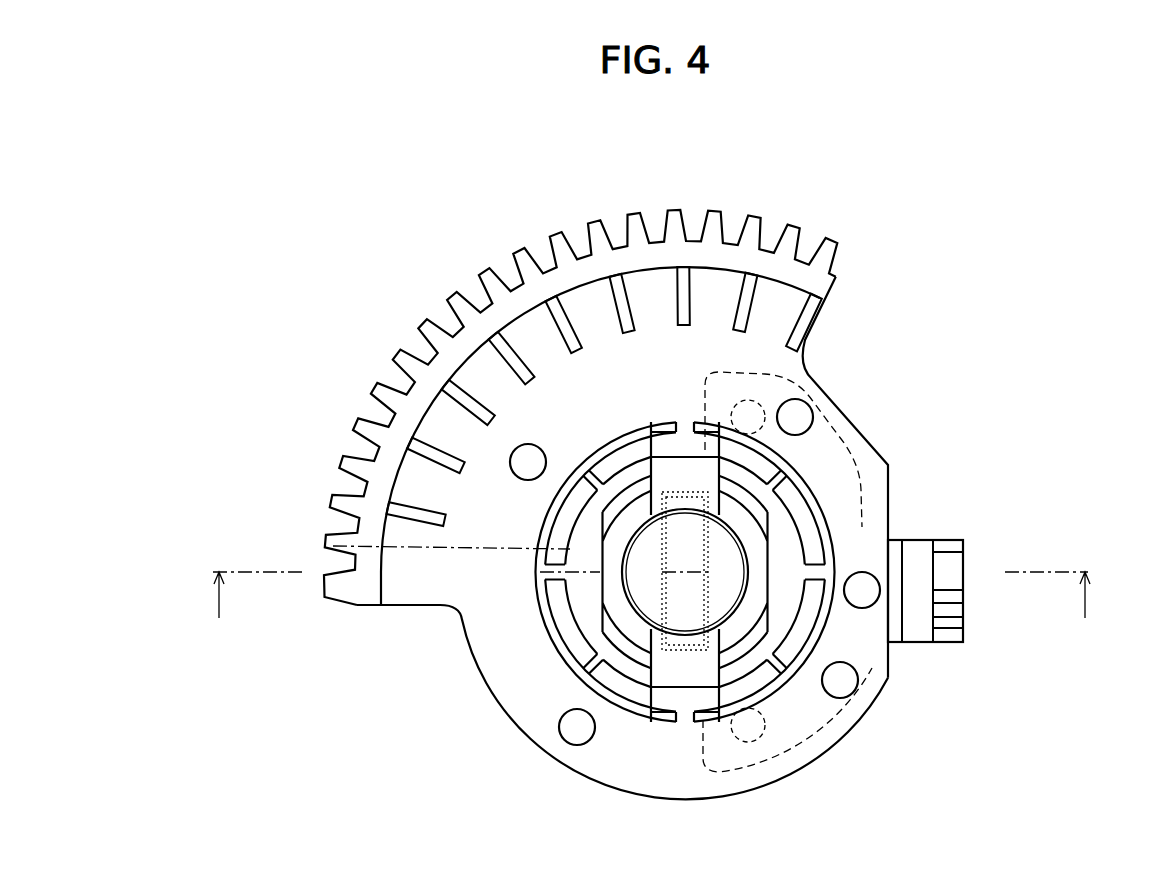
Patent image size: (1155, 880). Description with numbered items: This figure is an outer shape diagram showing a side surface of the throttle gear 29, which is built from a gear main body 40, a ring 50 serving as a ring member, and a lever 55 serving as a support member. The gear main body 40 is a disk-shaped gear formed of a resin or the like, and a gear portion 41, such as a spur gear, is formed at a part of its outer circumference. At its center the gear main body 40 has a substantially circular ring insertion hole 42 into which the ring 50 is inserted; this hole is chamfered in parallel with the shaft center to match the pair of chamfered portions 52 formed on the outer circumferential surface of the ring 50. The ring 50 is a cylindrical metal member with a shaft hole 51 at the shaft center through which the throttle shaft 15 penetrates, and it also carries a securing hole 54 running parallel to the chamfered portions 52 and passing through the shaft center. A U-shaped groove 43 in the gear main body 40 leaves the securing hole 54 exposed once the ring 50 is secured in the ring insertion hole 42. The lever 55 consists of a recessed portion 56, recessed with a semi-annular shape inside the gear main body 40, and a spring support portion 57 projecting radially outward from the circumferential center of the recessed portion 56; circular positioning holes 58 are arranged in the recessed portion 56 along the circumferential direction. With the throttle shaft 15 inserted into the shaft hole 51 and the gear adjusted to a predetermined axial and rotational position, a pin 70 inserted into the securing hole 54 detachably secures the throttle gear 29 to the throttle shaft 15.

The throttle shaft 15 is at (333, 546).
The throttle gear 29 is at (952, 316).
The gear main body 40 is at (612, 766).
The gear portion 41 is at (716, 212).
The ring insertion hole 42 is at (625, 642).
The U-shaped groove 43 is at (670, 490).
The ring 50 is at (600, 620).
The shaft hole 51 is at (655, 548).
The chamfered portions 52 is at (600, 575).
The securing hole 54 is at (640, 440).
The lever 55 is at (850, 445).
The recessed portion 56 is at (805, 712).
The spring support portion 57 is at (963, 556).
The positioning holes 58 is at (758, 405).
The pin 70 is at (877, 685).